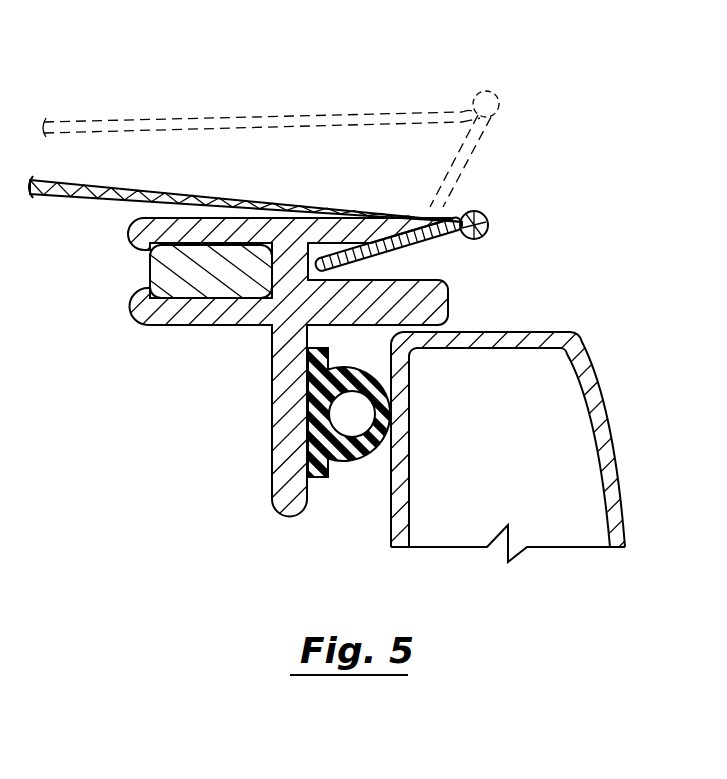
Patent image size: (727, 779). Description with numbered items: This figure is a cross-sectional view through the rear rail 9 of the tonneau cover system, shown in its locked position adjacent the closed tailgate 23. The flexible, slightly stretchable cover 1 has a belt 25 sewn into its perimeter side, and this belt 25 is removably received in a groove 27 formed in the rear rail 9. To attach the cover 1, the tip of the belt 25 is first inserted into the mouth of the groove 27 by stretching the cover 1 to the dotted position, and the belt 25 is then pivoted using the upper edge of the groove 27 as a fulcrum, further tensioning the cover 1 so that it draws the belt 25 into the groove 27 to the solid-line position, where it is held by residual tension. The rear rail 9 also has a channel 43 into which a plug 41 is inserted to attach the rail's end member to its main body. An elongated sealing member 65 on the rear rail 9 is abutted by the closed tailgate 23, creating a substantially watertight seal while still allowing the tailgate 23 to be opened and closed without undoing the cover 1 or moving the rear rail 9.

The cover 1 is at (151, 168).
The rear rail 9 is at (289, 249).
The tailgate 23 is at (524, 469).
The belt 25 is at (340, 247).
The groove 27 is at (418, 272).
The plug 41 is at (178, 268).
The channel 43 is at (210, 298).
The sealing member 65 is at (358, 468).